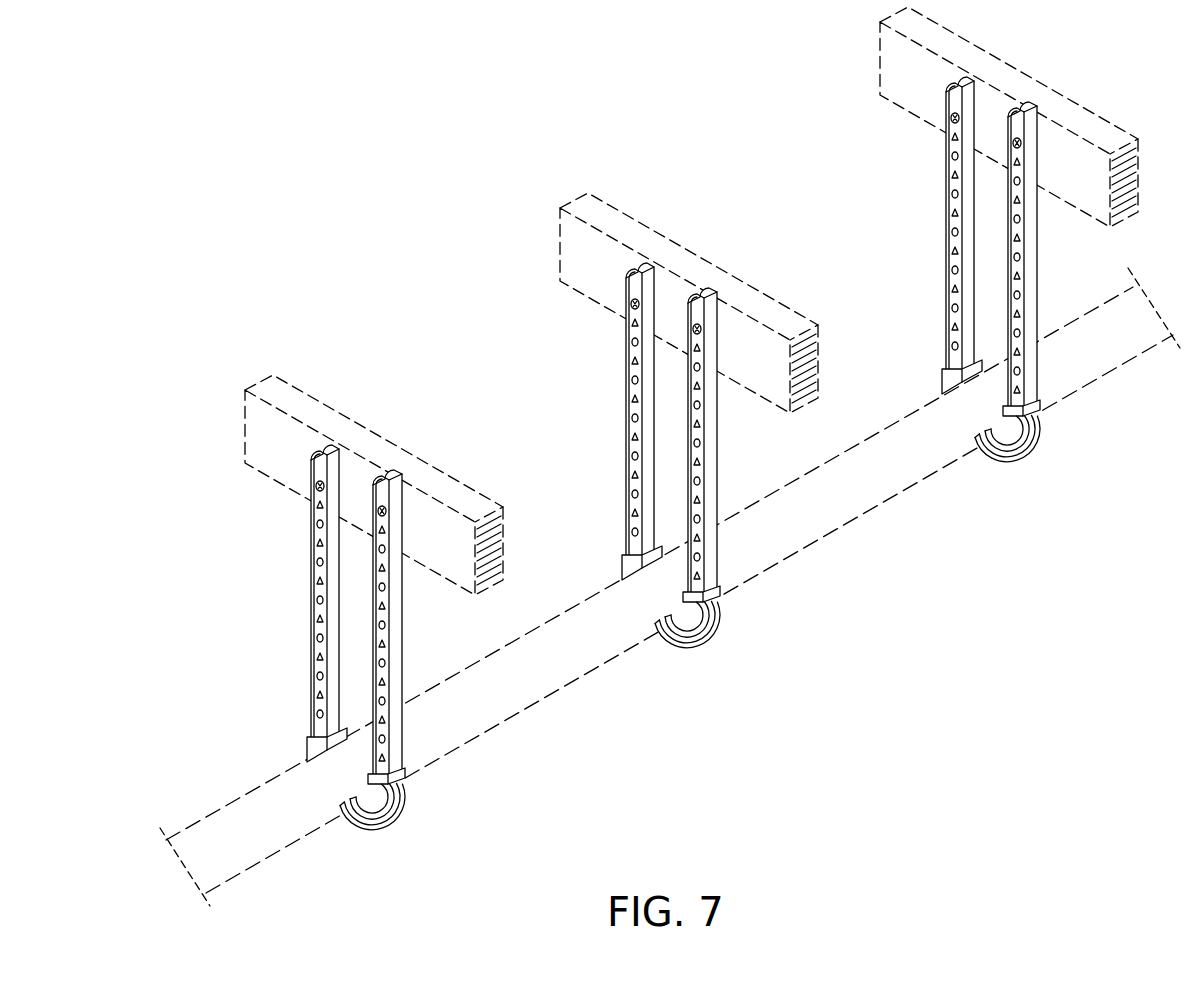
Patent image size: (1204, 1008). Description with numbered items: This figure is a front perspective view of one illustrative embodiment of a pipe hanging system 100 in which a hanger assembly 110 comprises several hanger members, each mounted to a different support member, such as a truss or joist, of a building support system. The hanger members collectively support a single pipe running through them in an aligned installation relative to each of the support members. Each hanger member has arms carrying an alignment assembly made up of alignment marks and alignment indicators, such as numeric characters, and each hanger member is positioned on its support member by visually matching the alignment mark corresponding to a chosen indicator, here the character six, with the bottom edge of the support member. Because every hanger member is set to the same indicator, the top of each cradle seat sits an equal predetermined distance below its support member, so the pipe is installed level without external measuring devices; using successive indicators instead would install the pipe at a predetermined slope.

The pipe hanging system 100 is at (382, 203).
The hanger assembly 110 is at (835, 688).